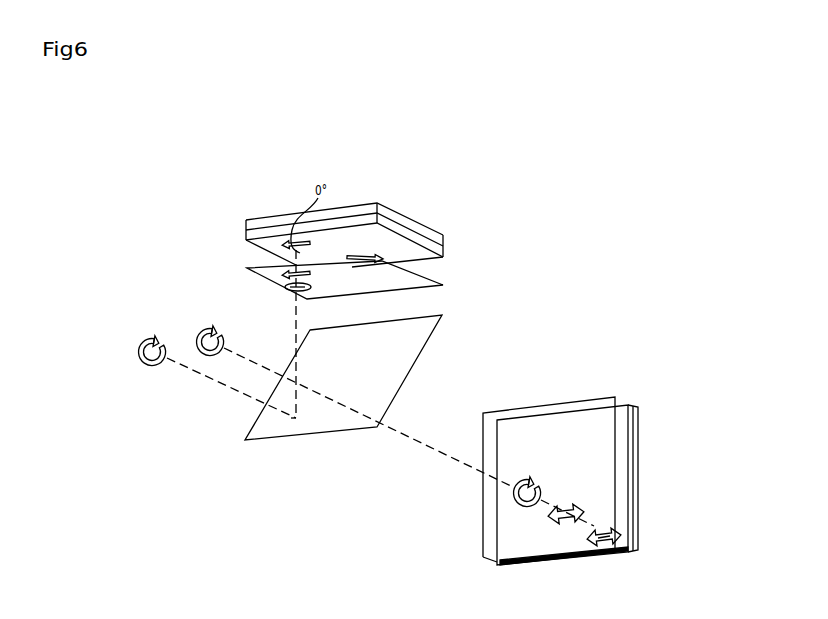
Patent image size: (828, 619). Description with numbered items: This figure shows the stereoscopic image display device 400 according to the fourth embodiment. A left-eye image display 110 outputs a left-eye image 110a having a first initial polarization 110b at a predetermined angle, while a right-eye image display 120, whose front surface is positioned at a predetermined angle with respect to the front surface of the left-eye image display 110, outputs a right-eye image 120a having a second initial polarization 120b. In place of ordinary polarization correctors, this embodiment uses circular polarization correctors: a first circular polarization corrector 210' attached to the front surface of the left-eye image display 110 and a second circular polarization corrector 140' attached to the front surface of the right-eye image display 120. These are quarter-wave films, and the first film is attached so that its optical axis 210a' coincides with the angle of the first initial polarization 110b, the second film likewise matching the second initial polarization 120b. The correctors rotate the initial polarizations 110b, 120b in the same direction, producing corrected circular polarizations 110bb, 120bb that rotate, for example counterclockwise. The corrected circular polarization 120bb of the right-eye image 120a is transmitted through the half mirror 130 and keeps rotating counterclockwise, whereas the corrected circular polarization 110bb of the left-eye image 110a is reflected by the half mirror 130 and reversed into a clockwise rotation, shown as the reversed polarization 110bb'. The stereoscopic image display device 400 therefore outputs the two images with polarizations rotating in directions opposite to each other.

The stereoscopic image display device 400 is at (73, 126).
The left-eye image display 110 is at (398, 213).
The left-eye image 110a is at (341, 260).
The first initial polarization 110b is at (290, 255).
The corrected circular polarization 110bb is at (259, 297).
The reversed corrected circular polarization 110bb' is at (111, 340).
The right-eye image display 120 is at (638, 478).
The right-eye image 120a is at (570, 450).
The second initial polarization 120b is at (608, 544).
The corrected circular polarization 120bb is at (198, 335).
The half mirror 130 is at (257, 442).
The second circular polarization corrector 140' is at (512, 479).
The first circular polarization corrector 210' is at (321, 260).
The optical axis 210a' is at (329, 290).